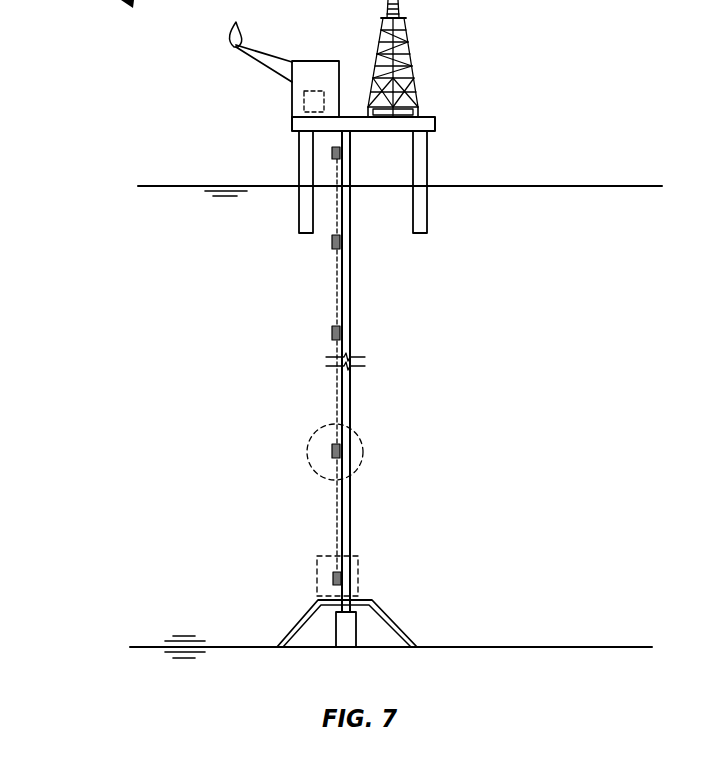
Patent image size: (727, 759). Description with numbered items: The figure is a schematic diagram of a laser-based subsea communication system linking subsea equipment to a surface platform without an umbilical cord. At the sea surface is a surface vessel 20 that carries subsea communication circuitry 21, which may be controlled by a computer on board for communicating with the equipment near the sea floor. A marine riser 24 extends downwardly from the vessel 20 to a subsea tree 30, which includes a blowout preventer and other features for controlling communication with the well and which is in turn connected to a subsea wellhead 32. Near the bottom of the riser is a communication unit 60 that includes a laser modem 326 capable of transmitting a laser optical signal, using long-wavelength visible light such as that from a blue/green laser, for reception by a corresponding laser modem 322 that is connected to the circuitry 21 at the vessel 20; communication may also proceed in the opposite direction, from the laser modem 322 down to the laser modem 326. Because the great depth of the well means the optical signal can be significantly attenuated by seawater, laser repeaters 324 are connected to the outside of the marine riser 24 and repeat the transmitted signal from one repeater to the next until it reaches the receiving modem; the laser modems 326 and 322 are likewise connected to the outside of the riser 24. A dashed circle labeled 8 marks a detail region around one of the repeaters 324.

The surface vessel 20 is at (427, 160).
The subsea communication circuitry 21 is at (308, 91).
The marine riser 24 is at (351, 302).
The subsea tree 30 is at (296, 620).
The subsea wellhead 32 is at (336, 628).
The communication unit 60 is at (359, 568).
The detail view reference 8 is at (360, 440).
The laser modem 322 is at (331, 152).
The laser repeaters 324 is at (332, 244).
The laser modem 326 is at (333, 578).